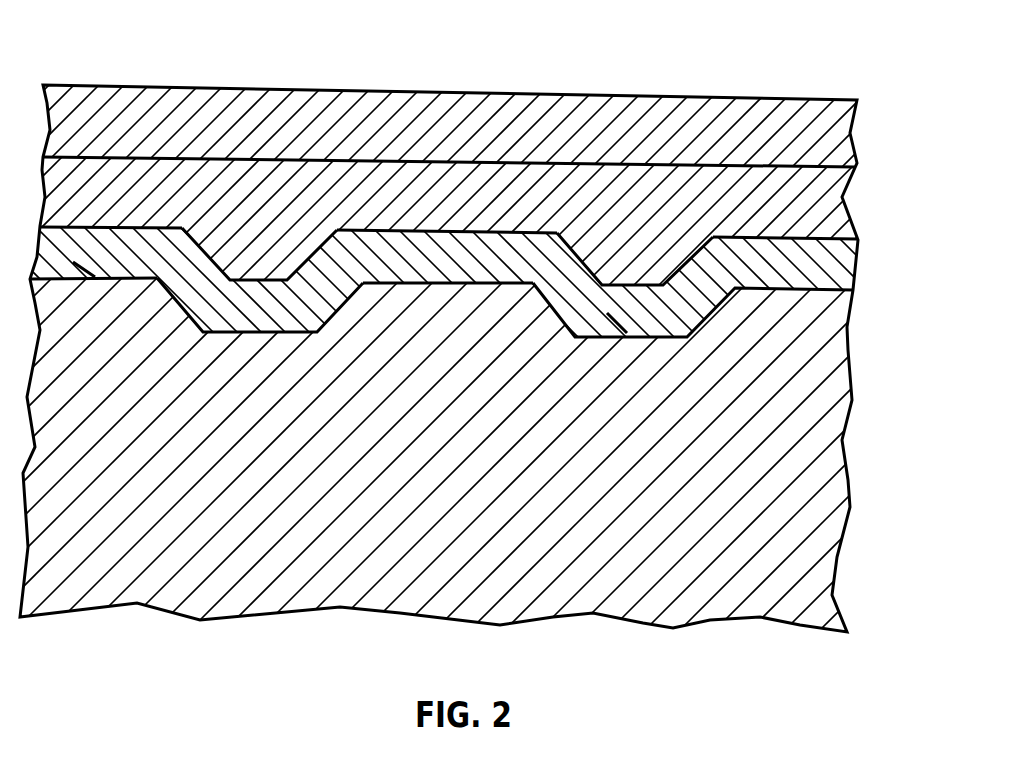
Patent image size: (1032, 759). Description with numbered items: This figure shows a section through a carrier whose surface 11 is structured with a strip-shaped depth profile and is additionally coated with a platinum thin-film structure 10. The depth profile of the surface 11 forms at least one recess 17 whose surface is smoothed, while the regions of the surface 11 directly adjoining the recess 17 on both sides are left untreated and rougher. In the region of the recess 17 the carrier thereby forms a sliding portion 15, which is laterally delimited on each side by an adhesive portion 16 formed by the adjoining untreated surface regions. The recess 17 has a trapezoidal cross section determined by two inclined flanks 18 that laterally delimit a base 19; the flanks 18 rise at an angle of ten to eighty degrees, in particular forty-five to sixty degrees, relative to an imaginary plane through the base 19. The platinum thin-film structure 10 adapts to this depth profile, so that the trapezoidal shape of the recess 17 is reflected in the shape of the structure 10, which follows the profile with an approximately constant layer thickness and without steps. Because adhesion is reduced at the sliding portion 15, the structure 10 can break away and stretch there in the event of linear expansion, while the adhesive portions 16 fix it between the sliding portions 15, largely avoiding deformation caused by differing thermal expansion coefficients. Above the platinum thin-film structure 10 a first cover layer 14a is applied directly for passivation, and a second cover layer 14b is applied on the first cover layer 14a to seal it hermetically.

The platinum thin-film structure 10 is at (875, 146).
The surface 11 is at (98, 279).
The first cover layer 14a is at (828, 267).
The second cover layer 14b is at (826, 203).
The sliding portion 15 is at (260, 333).
The adhesive portion 16 is at (440, 283).
The recess 17 is at (260, 333).
The flanks 18 is at (558, 316).
The base 19 is at (630, 337).